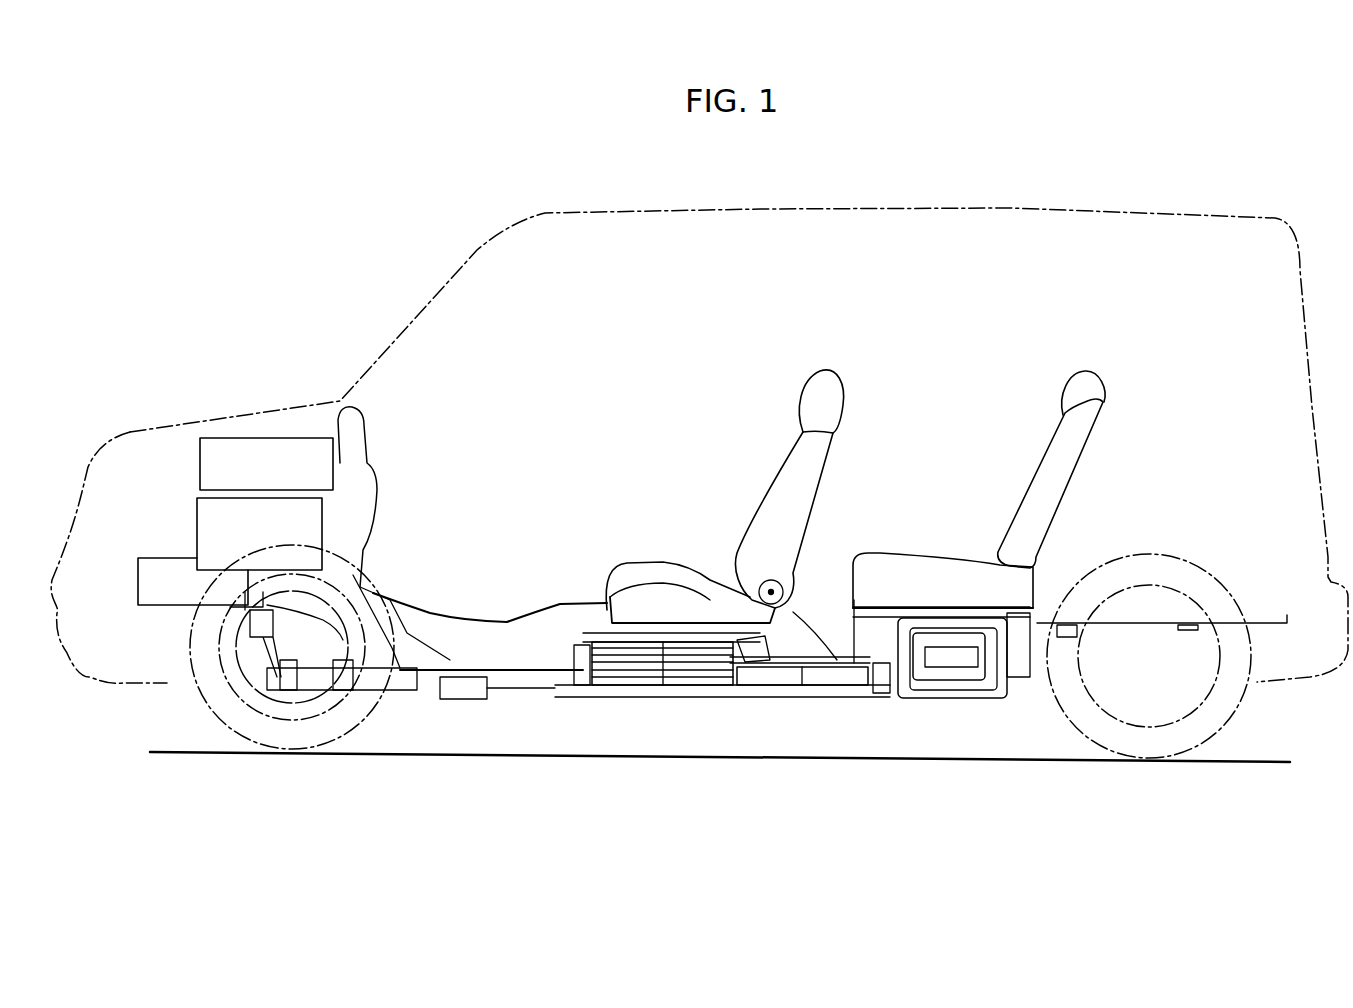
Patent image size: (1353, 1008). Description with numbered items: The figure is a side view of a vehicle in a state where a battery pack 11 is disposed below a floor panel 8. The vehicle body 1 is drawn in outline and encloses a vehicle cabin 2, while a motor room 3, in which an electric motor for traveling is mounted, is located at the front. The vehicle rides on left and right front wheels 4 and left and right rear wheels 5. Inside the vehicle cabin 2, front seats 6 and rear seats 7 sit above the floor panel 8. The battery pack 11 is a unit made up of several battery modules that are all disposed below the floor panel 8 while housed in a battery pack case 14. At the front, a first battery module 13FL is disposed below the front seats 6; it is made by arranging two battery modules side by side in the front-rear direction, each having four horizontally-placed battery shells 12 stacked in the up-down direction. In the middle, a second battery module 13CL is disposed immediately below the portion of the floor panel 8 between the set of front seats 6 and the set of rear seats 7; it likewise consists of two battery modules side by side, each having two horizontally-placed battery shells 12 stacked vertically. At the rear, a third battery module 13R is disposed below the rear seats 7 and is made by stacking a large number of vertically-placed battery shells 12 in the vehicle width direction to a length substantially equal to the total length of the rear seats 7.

The vehicle body 1 is at (1160, 213).
The vehicle cabin 2 is at (600, 339).
The motor room 3 is at (137, 518).
The front wheels 4 is at (248, 740).
The rear wheels 5 is at (1212, 742).
The front seats 6 is at (765, 483).
The rear seats 7 is at (1037, 455).
The floor panel 8 is at (570, 640).
The battery pack 11 is at (584, 697).
The battery shells 12 is at (680, 637).
The first battery module 13FL is at (730, 703).
The second battery module 13CL is at (868, 703).
The third battery module 13R is at (1000, 705).
The battery pack case 14 is at (875, 553).